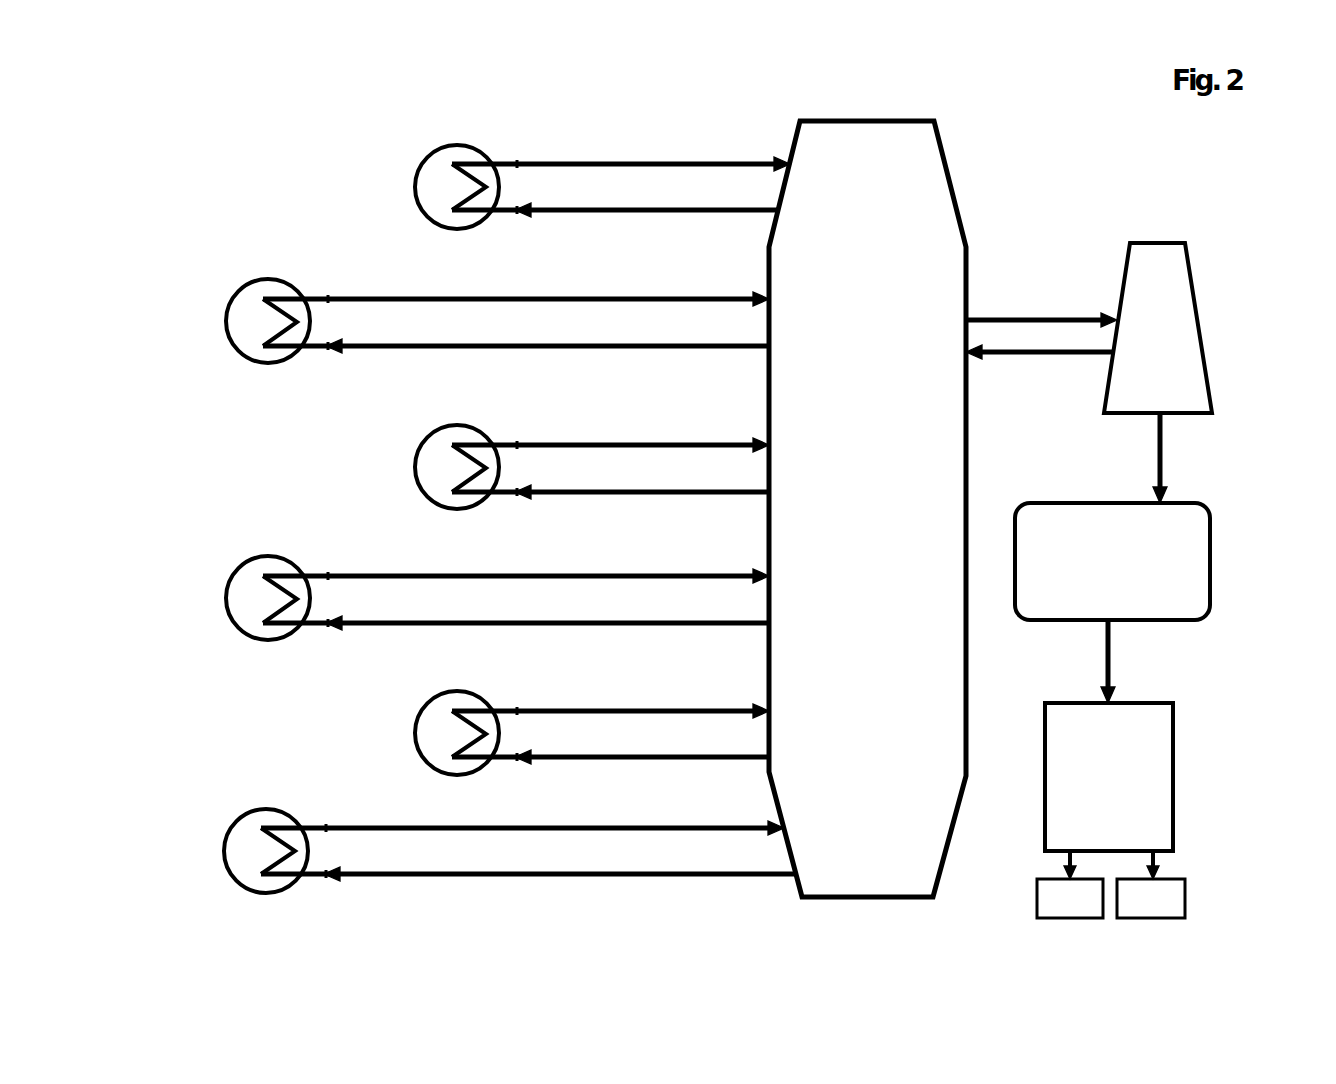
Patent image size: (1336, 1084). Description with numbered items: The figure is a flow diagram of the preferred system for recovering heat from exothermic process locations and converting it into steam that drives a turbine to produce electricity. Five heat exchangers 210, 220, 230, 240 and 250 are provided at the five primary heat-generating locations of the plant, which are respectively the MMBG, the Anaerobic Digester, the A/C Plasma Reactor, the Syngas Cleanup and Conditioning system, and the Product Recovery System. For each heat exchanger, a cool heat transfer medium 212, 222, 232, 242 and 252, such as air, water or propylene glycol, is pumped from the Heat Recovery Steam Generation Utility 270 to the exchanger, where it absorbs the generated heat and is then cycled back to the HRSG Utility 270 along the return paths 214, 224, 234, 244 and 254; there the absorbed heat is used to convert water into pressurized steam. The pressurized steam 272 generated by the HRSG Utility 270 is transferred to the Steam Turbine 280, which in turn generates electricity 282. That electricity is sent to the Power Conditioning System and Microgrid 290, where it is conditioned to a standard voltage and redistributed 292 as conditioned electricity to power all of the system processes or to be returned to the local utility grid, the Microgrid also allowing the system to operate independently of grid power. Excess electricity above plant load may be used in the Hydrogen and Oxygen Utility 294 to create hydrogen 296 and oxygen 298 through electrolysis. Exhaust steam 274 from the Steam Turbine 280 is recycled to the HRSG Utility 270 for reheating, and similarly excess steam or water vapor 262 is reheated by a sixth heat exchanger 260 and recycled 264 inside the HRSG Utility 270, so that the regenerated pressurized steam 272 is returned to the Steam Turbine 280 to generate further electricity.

The heat exchanger 210 is at (414, 187).
The cool heat transfer medium 212 is at (698, 226).
The supply line 214 is at (579, 150).
The heat exchanger 220 is at (226, 321).
The cool heat transfer medium 222 is at (698, 360).
The supply line 224 is at (579, 284).
The heat exchanger 230 is at (414, 467).
The cool heat transfer medium 232 is at (698, 508).
The supply line 234 is at (579, 432).
The heat exchanger 240 is at (226, 598).
The cool heat transfer medium 242 is at (698, 636).
The supply line 244 is at (579, 564).
The heat exchanger 250 is at (414, 733).
The cool heat transfer medium 252 is at (698, 770).
The supply line 254 is at (579, 698).
The heat exchanger 260 is at (224, 851).
The excess steam/water vapor 262 is at (698, 886).
The recycled steam 264 is at (579, 815).
The Heat Recovery Steam Generation (HRSG) Utility 270 is at (958, 208).
The pressurized steam 272 is at (1022, 303).
The exhaust steam 274 is at (1022, 368).
The Steam Turbine 280 is at (1157, 243).
The electricity 282 is at (1163, 454).
The Power Conditioning System and Microgrid 290 is at (1075, 503).
The redistributed conditioned electricity 292 is at (1111, 655).
The Hydrogen and Oxygen Utility 294 is at (1175, 777).
The hydrogen 296 is at (1070, 884).
The oxygen 298 is at (1151, 884).